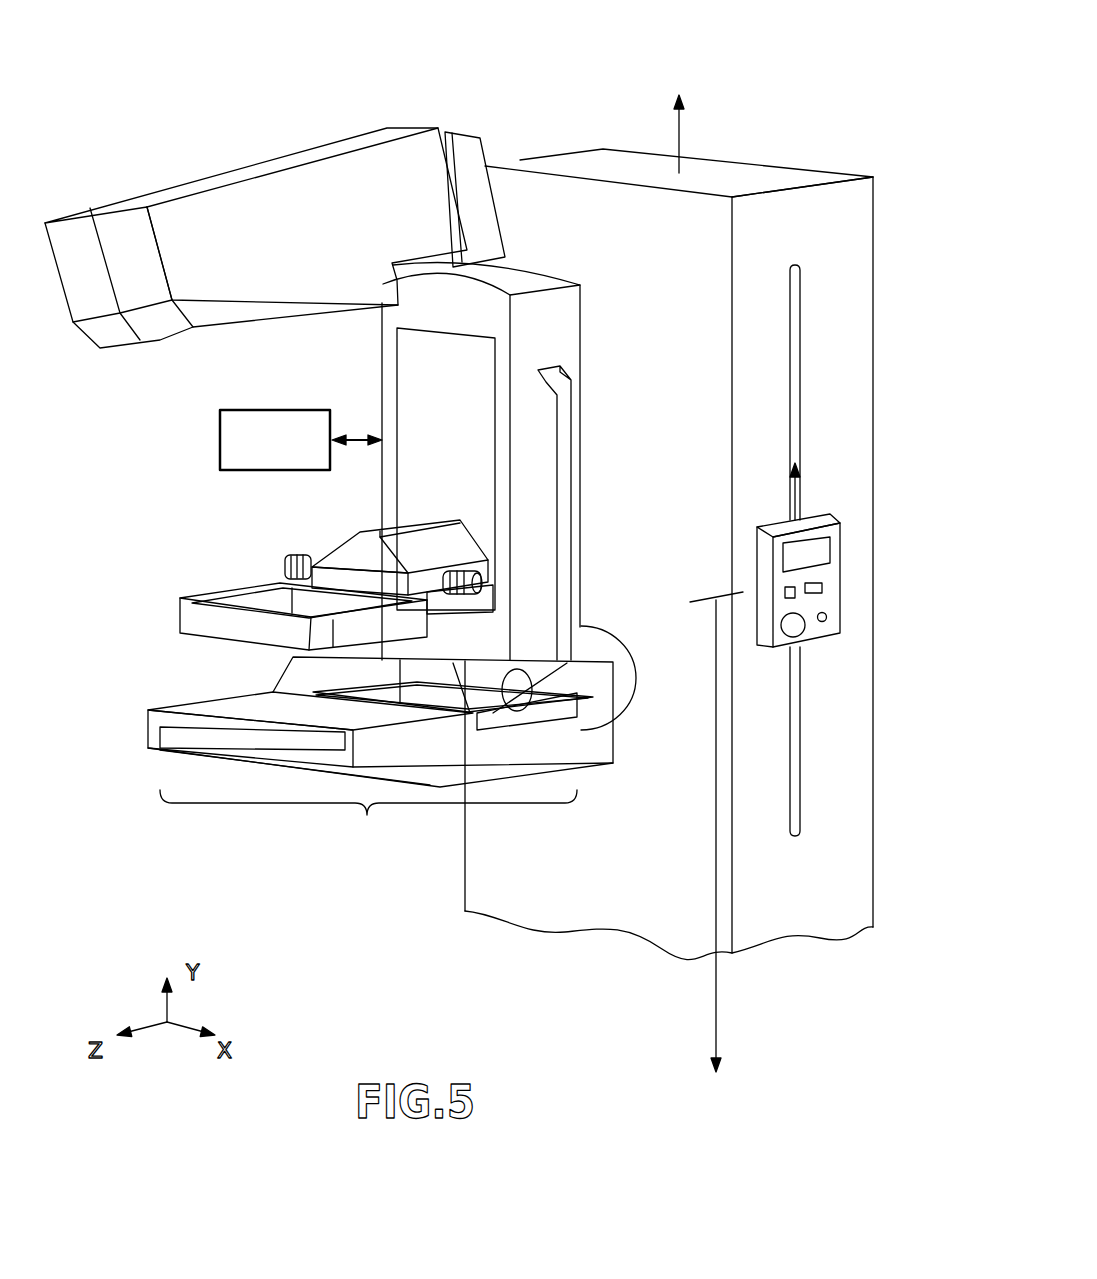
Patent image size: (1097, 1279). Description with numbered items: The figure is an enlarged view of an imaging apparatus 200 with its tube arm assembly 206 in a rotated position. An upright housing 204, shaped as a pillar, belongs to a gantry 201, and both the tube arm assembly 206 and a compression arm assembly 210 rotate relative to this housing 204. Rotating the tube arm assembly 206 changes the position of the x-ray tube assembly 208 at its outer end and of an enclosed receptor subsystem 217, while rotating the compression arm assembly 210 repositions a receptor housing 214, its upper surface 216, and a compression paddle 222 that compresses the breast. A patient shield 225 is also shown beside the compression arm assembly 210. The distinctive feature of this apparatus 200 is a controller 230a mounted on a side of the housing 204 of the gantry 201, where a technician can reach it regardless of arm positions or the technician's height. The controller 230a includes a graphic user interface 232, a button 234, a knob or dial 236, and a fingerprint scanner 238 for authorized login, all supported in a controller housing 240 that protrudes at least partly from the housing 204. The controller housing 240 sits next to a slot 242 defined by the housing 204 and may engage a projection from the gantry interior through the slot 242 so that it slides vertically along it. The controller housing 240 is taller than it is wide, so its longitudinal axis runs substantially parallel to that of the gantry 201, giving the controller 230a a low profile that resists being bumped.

The imaging apparatus 200 is at (708, 138).
The gantry 201 is at (850, 303).
The upright housing 204 is at (848, 363).
The tube arm assembly 206 is at (186, 355).
The x-ray tube assembly 208 is at (238, 140).
The compression arm assembly 210 is at (558, 338).
The receptor housing 214 is at (148, 738).
The upper surface 216 is at (222, 710).
The enclosed receptor subsystem 217 is at (368, 817).
The compression paddle 222 is at (230, 595).
The patient shield 225 is at (220, 442).
The controller 230a is at (856, 558).
The graphic user interface 232 is at (823, 550).
The button 234 is at (822, 588).
The knob or dial 236 is at (823, 617).
The fingerprint scanner 238 is at (792, 630).
The controller housing 240 is at (796, 527).
The slot 242 is at (802, 267).